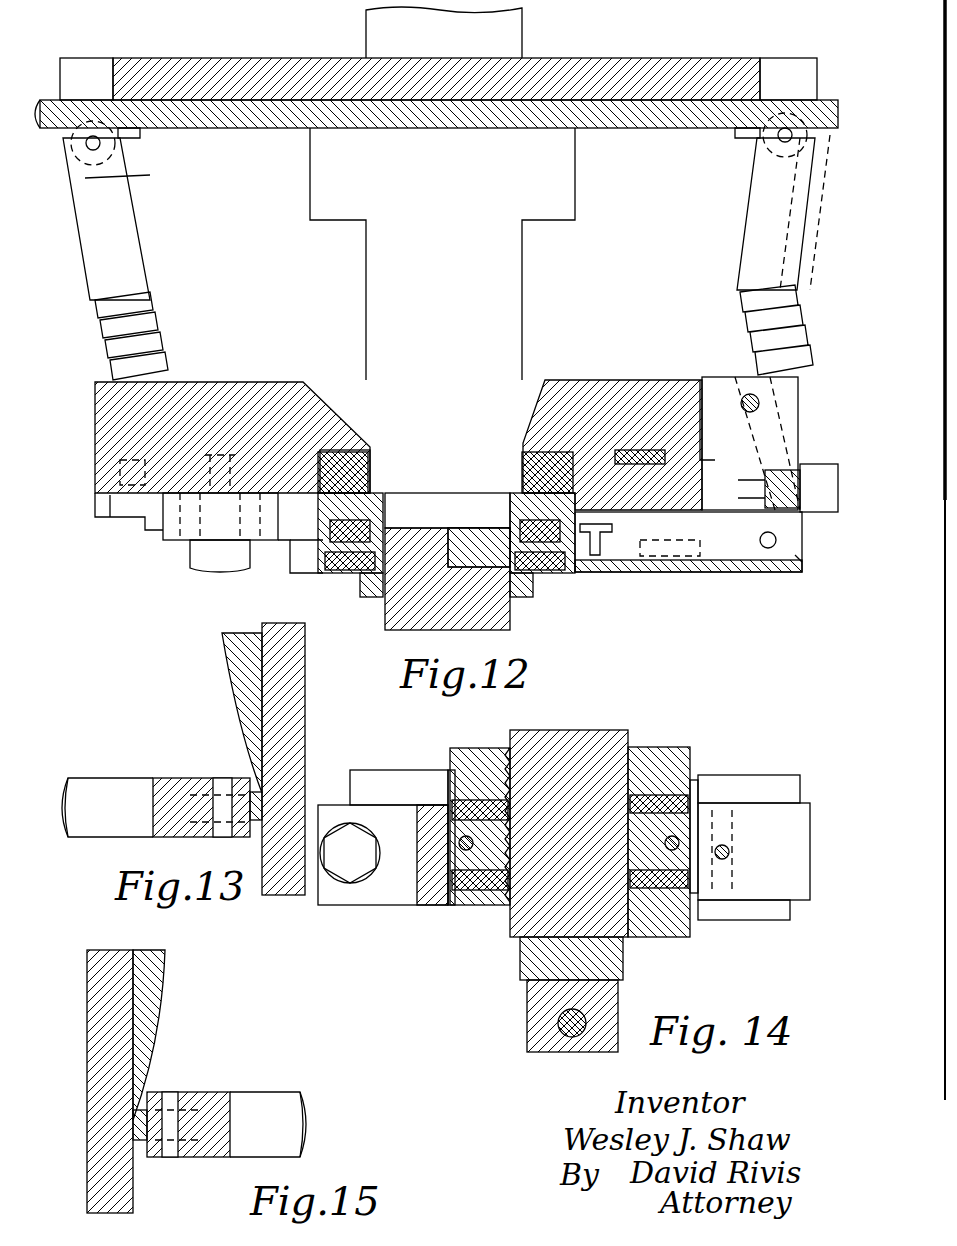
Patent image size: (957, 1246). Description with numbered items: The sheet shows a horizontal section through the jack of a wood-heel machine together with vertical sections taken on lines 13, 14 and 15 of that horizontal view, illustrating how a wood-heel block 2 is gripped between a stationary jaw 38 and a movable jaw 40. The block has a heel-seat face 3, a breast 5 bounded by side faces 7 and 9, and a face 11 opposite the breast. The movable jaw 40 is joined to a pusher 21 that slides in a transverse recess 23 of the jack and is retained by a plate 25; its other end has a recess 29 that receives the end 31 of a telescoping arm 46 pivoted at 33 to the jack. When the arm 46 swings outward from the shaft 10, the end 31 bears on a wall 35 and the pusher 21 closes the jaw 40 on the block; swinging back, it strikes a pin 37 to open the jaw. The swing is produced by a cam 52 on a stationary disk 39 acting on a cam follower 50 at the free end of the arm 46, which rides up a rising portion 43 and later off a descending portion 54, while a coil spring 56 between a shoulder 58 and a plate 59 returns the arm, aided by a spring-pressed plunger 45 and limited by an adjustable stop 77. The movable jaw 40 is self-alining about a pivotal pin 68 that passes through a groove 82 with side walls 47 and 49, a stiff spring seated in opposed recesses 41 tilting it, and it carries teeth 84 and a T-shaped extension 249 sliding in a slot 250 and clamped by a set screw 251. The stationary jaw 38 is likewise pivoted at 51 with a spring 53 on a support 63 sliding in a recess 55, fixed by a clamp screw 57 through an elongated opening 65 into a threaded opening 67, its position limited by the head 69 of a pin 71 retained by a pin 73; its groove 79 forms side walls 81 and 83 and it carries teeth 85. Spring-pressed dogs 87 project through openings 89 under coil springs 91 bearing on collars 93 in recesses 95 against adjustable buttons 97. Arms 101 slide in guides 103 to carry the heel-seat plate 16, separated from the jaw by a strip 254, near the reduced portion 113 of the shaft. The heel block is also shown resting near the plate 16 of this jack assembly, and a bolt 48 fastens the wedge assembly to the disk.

In FIG. 14, the wood-heel block 2 is at (590, 698).
In FIG. 14, the heel-seat face 3 is at (580, 1037).
In FIG. 12, the breast 5 is at (490, 630).
In FIG. 12, the side face 7 is at (350, 662).
In FIG. 12, the side face 9 is at (526, 645).
In FIG. 12, the shaft 10 is at (503, 300).
In FIG. 12, the face opposite to the breast 11 is at (440, 525).
In FIG. 12, the section line 13— 13 is at (785, 240).
In FIG. 12, the section line 14— 14 is at (277, 576).
In FIG. 12, the section line 15— 15 is at (100, 250).
In FIG. 14, the heel-seat plate 16 is at (530, 1005).
In FIG. 12, the pusher 21 is at (690, 572).
In FIG. 14, the pusher 21 is at (775, 890).
In FIG. 12, the transverse recess 23 is at (636, 575).
In FIG. 14, the transverse recess 23 is at (780, 780).
In FIG. 12, the plate 25 is at (690, 575).
In FIG. 12, the recess 29 is at (804, 562).
In FIG. 12, the end of arm 31 is at (735, 575).
In FIG. 12, the pivot 33 is at (790, 380).
In FIG. 12, the wall 35 is at (670, 534).
In FIG. 12, the pin 37 is at (768, 575).
In FIG. 12, the stationary jaw 38 is at (400, 620).
In FIG. 14, the stationary jaw 38 is at (478, 765).
In FIG. 12, the stationary disk 39 is at (600, 68).
In FIG. 13, the stationary disk 39 is at (296, 735).
In FIG. 14, the stationary disk 39 is at (670, 980).
In FIG. 15, the stationary disk 39 is at (95, 1020).
In FIG. 12, the movable jaw 40 is at (525, 590).
In FIG. 14, the movable jaw 40 is at (598, 755).
In FIG. 12, the recess 41 is at (470, 400).
In FIG. 14, the recess 41 is at (635, 935).
In FIG. 12, the rising portion of cam 43 is at (621, 450).
In FIG. 14, the rising portion of cam 43 is at (672, 935).
In FIG. 12, the spring-pressed plunger 45 is at (712, 460).
In FIG. 12, the arm 46 is at (133, 262).
In FIG. 13, the arm 46 is at (88, 785).
In FIG. 15, the arm 46 is at (275, 1110).
In FIG. 12, the side wall of groove 47 is at (560, 600).
In FIG. 13, the nut 48 is at (225, 715).
In FIG. 12, the side wall of groove 49 is at (560, 430).
In FIG. 12, the cam follower 50 is at (135, 138).
In FIG. 13, the cam follower 50 is at (252, 832).
In FIG. 15, the cam follower 50 is at (140, 1142).
In FIG. 14, the pivot 51 is at (366, 795).
In FIG. 12, the cam 52 is at (667, 128).
In FIG. 13, the cam 52 is at (232, 655).
In FIG. 15, the cam 52 is at (150, 985).
In FIG. 12, the spring 53 is at (396, 512).
In FIG. 14, the spring 53 is at (475, 920).
In FIG. 15, the descending portion of cam 54 is at (160, 1100).
In FIG. 12, the recess 55 is at (262, 520).
In FIG. 14, the recess 55 is at (365, 905).
In FIG. 12, the coil spring 56 is at (160, 312).
In FIG. 12, the clamp screw 57 is at (215, 560).
In FIG. 14, the clamp screw 57 is at (340, 840).
In FIG. 12, the shoulder 58 is at (790, 290).
In FIG. 12, the plate 59 is at (735, 378).
In FIG. 12, the support 63 is at (700, 380).
In FIG. 14, the support 63 is at (370, 800).
In FIG. 14, the elongated opening 65 is at (370, 905).
In FIG. 12, the screw-threaded opening 67 is at (215, 400).
In FIG. 12, the pivotal pin 68 is at (605, 538).
In FIG. 14, the pivotal pin 68 is at (730, 835).
In FIG. 12, the head 69 is at (115, 515).
In FIG. 12, the pin 71 is at (120, 480).
In FIG. 12, the pin 73 is at (145, 522).
In FIG. 12, the adjustable stop 77 is at (815, 465).
In FIG. 12, the groove 79 is at (340, 480).
In FIG. 12, the side wall 81 is at (355, 590).
In FIG. 12, the groove 82 is at (545, 455).
In FIG. 12, the side wall 83 is at (380, 455).
In FIG. 12, the teeth 84 is at (522, 520).
In FIG. 14, the teeth 84 is at (618, 980).
In FIG. 12, the teeth 85 is at (385, 520).
In FIG. 12, the dog 87 is at (440, 455).
In FIG. 14, the dog 87 is at (555, 750).
In FIG. 12, the opening 89 is at (510, 625).
In FIG. 14, the opening 89 is at (645, 750).
In FIG. 12, the coil spring 91 is at (542, 580).
In FIG. 14, the coil spring 91 is at (462, 800).
In FIG. 12, the collar 93 is at (460, 520).
In FIG. 14, the collar 93 is at (478, 750).
In FIG. 12, the recess 95 is at (621, 656).
In FIG. 12, the adjustable button 97 is at (330, 575).
In FIG. 14, the adjustable button 97 is at (450, 800).
In FIG. 12, the arm 101 is at (350, 455).
In FIG. 14, the arm 101 is at (448, 765).
In FIG. 12, the guide 103 is at (325, 380).
In FIG. 14, the guide 103 is at (445, 790).
In FIG. 14, the terminally reduced portion 113 is at (535, 1050).
In FIG. 12, the T-shaped extension 249 is at (577, 562).
In FIG. 14, the T-shaped extension 249 is at (750, 790).
In FIG. 12, the slot 250 is at (615, 590).
In FIG. 14, the slot 250 is at (740, 870).
In FIG. 14, the set screw 251 is at (535, 740).
In FIG. 12, the strip 254 is at (630, 380).